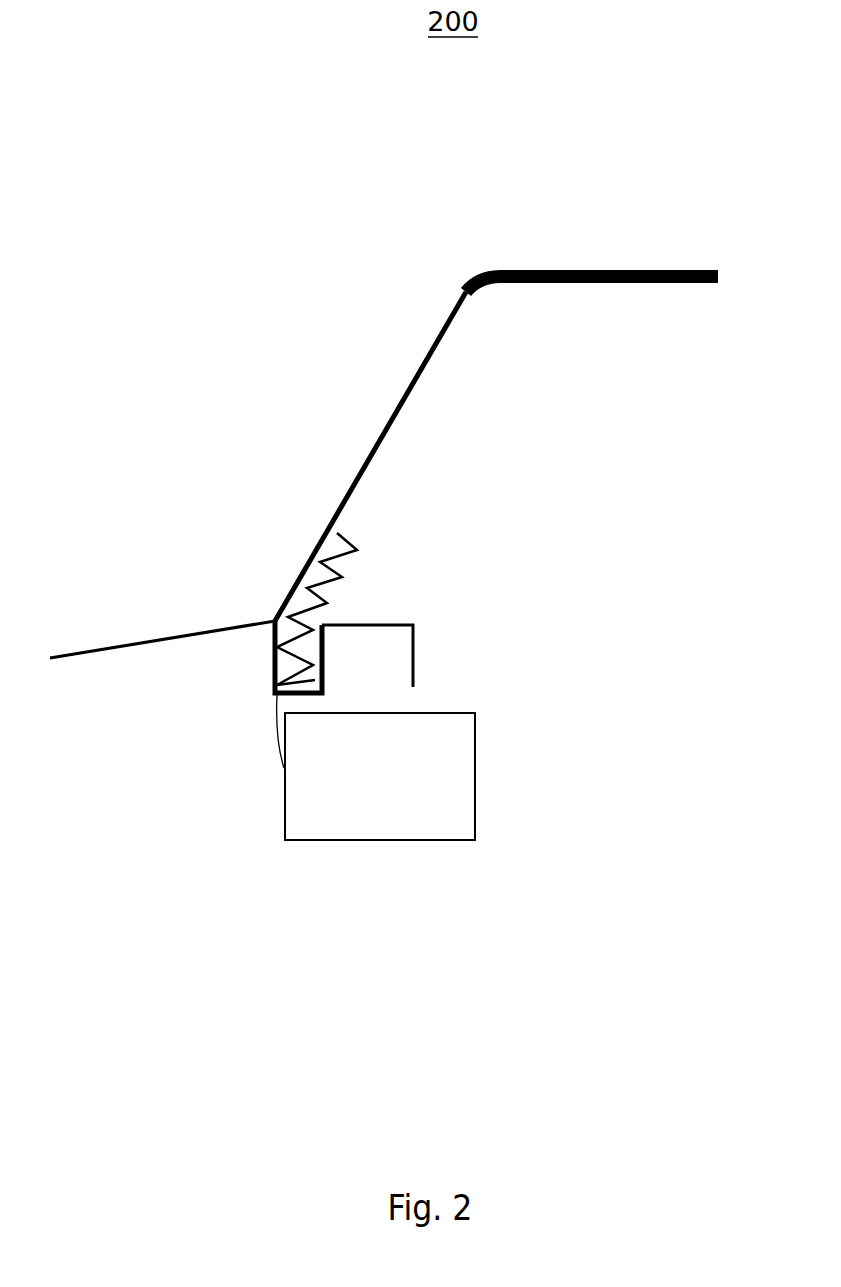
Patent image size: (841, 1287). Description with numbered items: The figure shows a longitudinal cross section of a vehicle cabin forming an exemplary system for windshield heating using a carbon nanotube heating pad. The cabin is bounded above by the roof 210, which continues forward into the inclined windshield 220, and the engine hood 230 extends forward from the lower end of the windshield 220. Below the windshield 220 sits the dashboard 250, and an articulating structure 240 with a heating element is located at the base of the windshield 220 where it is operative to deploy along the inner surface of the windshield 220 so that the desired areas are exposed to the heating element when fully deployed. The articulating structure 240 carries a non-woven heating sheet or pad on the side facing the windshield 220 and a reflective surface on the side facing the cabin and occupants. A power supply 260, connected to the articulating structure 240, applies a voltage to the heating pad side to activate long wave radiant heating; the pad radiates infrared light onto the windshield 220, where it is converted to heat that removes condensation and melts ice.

The roof 210 is at (657, 268).
The windshield 220 is at (388, 413).
The engine hood 230 is at (85, 648).
The articulating structure 240 is at (360, 538).
The dashboard 250 is at (422, 655).
The power supply 260 is at (376, 767).